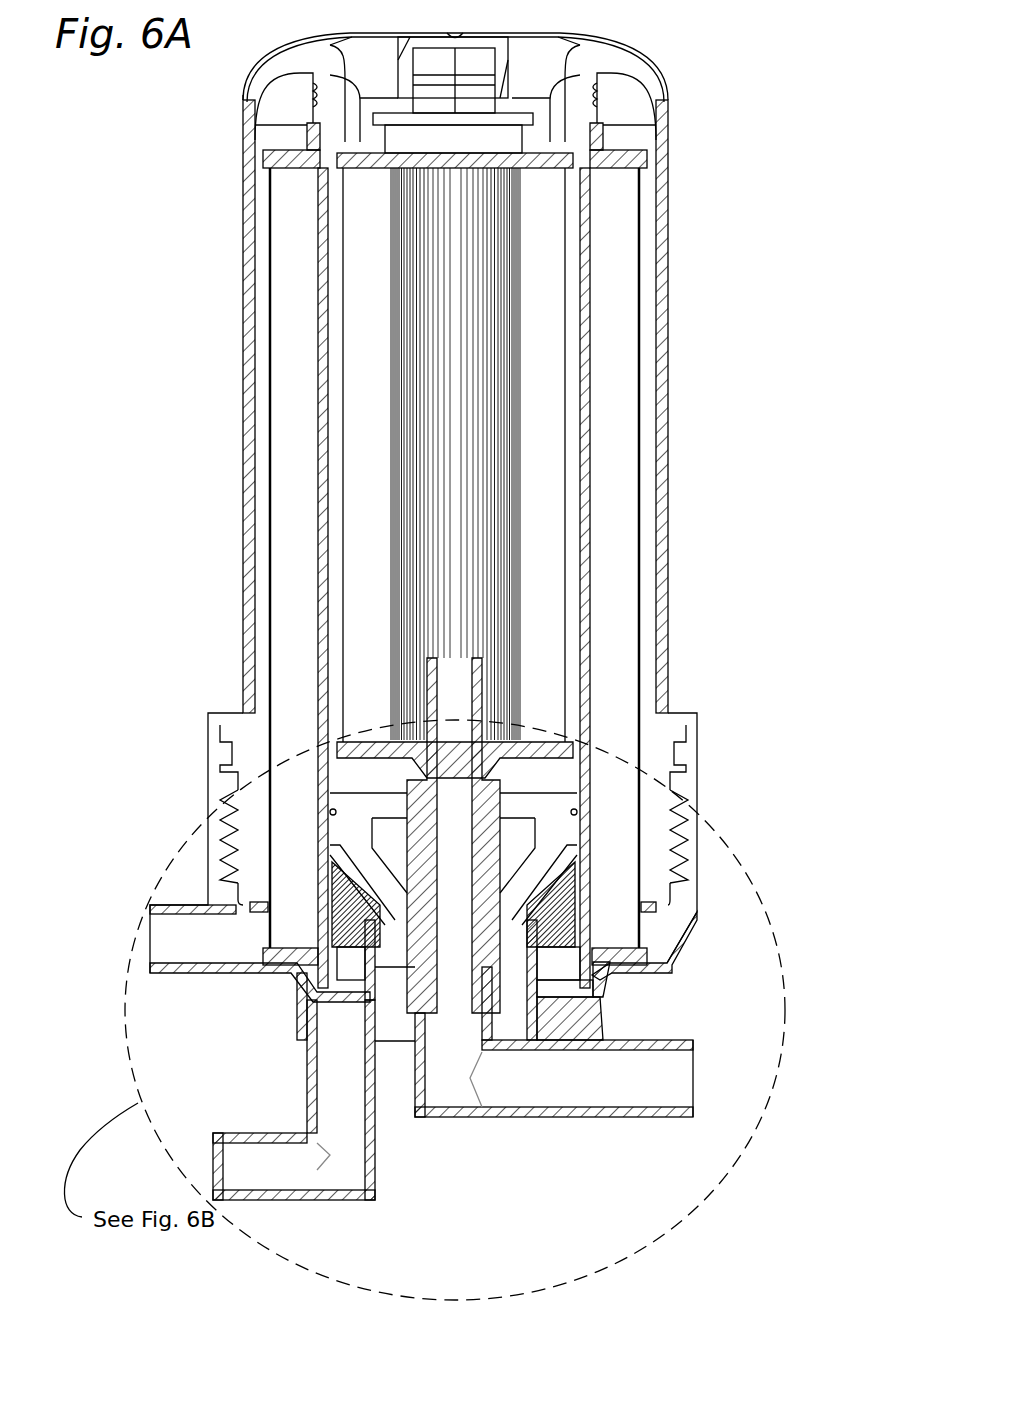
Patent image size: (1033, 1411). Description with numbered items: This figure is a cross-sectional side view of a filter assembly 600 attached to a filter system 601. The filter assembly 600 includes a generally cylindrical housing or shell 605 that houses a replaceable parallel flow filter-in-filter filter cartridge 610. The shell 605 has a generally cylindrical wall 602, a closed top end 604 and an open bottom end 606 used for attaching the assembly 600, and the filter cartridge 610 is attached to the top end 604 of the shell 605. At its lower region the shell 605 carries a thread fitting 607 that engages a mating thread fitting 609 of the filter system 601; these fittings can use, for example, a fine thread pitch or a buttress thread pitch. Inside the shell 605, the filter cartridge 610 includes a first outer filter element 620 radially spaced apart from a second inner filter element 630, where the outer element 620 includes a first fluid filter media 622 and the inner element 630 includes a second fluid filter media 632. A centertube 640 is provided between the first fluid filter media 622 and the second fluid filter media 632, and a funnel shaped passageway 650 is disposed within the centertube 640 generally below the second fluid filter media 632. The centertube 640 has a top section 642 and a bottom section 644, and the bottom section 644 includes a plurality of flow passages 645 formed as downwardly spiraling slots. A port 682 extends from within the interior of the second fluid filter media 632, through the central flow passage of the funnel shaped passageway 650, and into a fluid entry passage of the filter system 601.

The filter assembly 600 is at (728, 92).
The filter system 601 is at (720, 1022).
The cylindrical wall 602 is at (668, 440).
The closed top end 604 is at (580, 40).
The housing or shell 605 is at (665, 215).
The open bottom end 606 is at (240, 916).
The thread fitting 607 is at (682, 818).
The thread fitting 609 is at (690, 840).
The filter cartridge 610 is at (262, 137).
The first outer filter element 620 is at (268, 285).
The first fluid filter media 622 is at (288, 332).
The second inner filter element 630 is at (565, 350).
The second fluid filter media 632 is at (548, 410).
The centertube 640 is at (318, 405).
The top section 642 is at (612, 290).
The bottom section 644 is at (300, 910).
The flow passages 645 is at (415, 955).
The funnel shaped passageway 650 is at (337, 858).
The port 682 is at (418, 950).